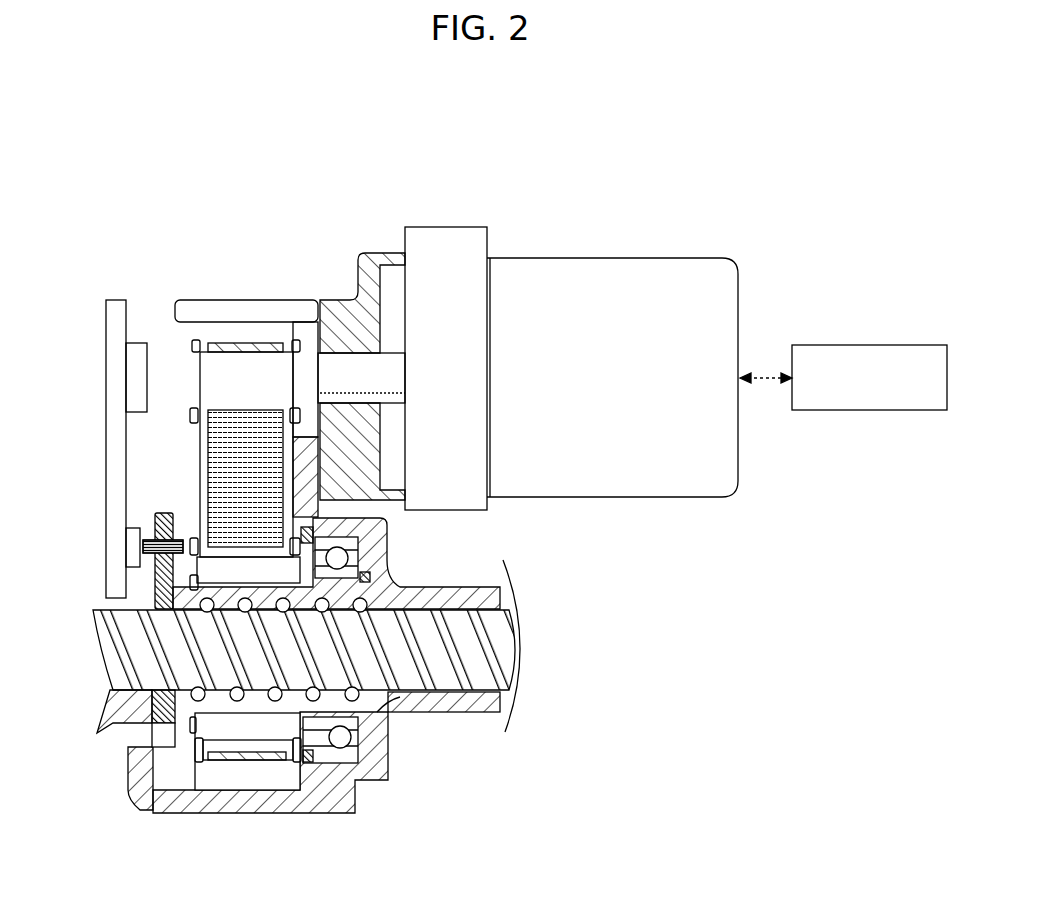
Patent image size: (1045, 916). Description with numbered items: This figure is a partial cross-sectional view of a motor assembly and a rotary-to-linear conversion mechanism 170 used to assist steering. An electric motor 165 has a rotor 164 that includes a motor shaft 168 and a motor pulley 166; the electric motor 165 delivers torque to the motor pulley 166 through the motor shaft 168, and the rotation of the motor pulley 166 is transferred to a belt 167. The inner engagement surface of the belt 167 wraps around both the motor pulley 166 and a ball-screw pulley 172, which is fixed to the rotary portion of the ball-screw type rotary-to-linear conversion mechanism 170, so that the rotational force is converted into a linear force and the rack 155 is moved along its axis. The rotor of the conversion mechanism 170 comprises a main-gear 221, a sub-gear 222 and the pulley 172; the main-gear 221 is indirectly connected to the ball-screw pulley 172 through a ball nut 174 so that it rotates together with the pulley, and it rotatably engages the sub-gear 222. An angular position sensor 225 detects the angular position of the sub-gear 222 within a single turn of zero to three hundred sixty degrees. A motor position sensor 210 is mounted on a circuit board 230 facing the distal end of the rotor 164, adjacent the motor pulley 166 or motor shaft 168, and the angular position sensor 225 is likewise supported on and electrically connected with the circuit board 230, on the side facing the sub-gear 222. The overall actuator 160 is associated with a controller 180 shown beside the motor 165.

The rack 155 is at (457, 670).
The actuator 160 is at (646, 532).
The rotor 164 is at (342, 222).
The electric motor 165 is at (611, 273).
The motor pulley 166 is at (247, 362).
The belt 167 is at (215, 465).
The motor shaft 168 is at (348, 363).
The rotary-to-linear conversion mechanism 170 is at (582, 680).
The ball-screw pulley 172 is at (230, 740).
The ball nut 174 is at (280, 705).
The controller 180 is at (872, 343).
The motor position sensor 210 is at (140, 342).
The main-gear 221 is at (152, 718).
The sub-gear 222 is at (190, 493).
The angular position sensor 225 is at (138, 523).
The circuit board 230 is at (113, 412).